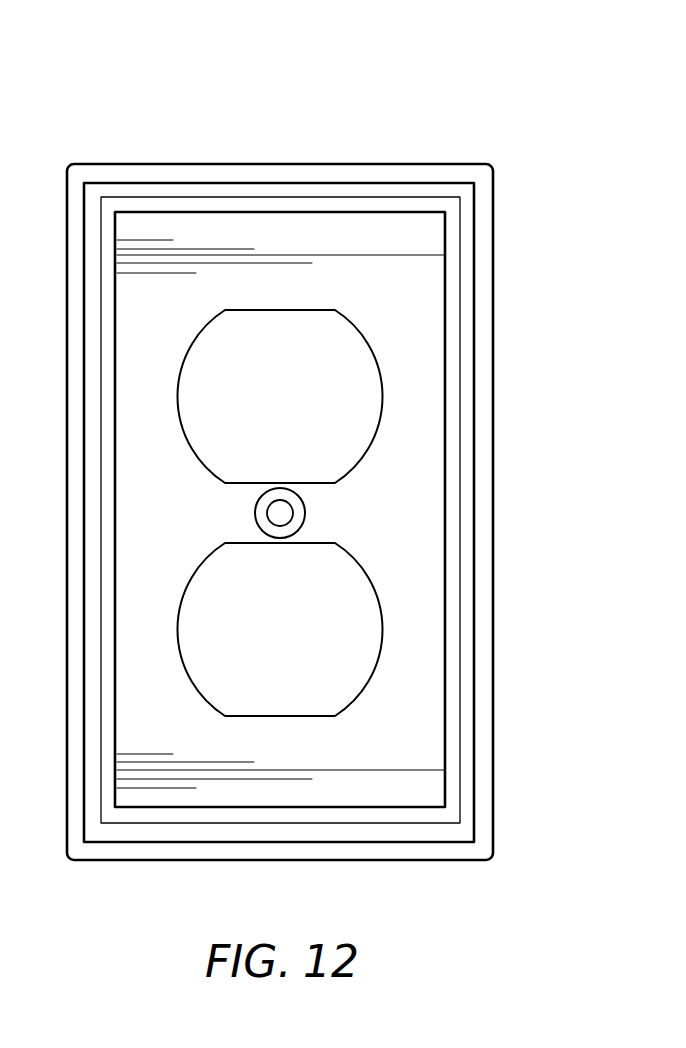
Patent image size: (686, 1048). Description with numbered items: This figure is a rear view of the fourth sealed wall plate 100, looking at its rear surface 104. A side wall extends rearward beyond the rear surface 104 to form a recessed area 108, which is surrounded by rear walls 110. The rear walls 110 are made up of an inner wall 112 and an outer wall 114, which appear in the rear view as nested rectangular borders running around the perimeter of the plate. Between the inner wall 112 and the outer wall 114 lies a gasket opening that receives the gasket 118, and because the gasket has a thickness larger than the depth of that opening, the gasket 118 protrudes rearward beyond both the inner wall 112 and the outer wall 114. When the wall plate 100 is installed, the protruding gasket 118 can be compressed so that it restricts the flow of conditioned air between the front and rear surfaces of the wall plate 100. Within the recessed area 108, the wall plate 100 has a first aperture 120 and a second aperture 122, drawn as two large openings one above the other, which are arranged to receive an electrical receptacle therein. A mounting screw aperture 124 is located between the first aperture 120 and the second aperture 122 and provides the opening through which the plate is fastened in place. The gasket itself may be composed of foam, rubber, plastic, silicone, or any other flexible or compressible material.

The fourth sealed wall plate 100 is at (323, 92).
The rear surface 104 is at (408, 302).
The recessed area 108 is at (408, 667).
The rear walls 110 is at (65, 160).
The inner wall 112 is at (146, 200).
The outer wall 114 is at (343, 177).
The gasket 118 is at (203, 193).
The first aperture 120 is at (338, 404).
The second aperture 122 is at (341, 637).
The mounting screw aperture 124 is at (293, 513).